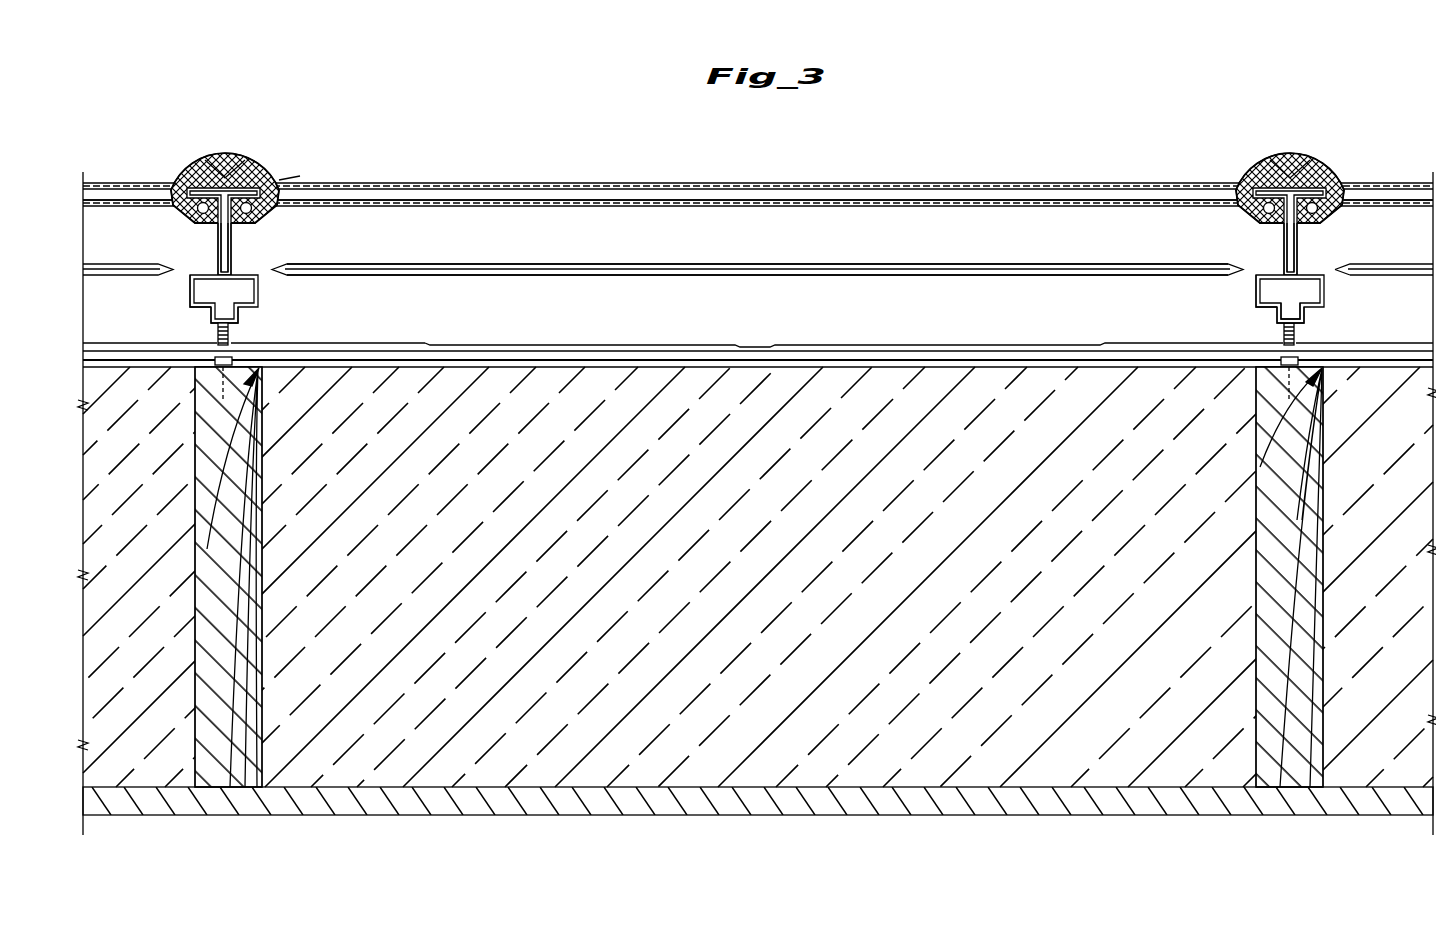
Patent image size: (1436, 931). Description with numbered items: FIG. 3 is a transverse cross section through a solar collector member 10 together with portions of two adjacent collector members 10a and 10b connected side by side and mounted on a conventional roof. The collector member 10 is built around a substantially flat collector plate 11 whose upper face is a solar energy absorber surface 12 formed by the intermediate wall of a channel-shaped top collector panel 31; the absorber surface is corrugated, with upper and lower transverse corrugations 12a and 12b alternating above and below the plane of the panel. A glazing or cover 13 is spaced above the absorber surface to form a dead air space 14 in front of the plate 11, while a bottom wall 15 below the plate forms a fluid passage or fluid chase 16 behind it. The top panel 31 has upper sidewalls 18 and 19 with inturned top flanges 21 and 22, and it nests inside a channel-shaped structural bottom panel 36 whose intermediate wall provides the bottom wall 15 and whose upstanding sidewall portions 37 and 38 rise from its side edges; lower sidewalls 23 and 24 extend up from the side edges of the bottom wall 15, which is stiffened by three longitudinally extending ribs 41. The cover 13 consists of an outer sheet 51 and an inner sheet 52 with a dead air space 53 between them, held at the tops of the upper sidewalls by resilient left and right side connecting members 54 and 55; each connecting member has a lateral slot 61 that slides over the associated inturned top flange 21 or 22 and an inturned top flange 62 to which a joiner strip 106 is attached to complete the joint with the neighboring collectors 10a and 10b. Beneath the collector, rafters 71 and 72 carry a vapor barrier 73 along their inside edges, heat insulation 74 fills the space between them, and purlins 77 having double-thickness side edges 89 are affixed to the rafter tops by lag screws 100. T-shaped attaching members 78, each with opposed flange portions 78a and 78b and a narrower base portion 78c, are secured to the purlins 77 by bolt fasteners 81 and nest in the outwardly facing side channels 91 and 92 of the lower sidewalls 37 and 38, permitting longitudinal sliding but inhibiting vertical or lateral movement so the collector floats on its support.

The solar collector member 10 is at (456, 165).
The adjacent collector member 10a is at (748, 210).
The adjacent collector member 10b is at (1305, 150).
The collector plate 11 is at (418, 264).
The solar energy absorber surface 12 is at (914, 261).
The upper transverse corrugations 12a is at (676, 264).
The lower transverse corrugations 12b is at (685, 277).
The glazing or cover 13 is at (118, 176).
The dead air space 14 is at (796, 244).
The bottom wall 15 is at (368, 342).
The fluid passage or fluid chase 16 is at (796, 314).
The upper sidewall 18 is at (235, 257).
The upper sidewall 19 is at (1280, 237).
The inturned top flange 21 is at (270, 165).
The inturned top flange 22 is at (1245, 172).
The lower sidewall 23 is at (244, 327).
The lower sidewall 24 is at (1268, 313).
The top collector panel 31 is at (1042, 260).
The structural bottom panel 36 is at (904, 341).
The sidewall portion 37 is at (1298, 243).
The sidewall portion 38 is at (1285, 250).
The ribs 41 is at (416, 343).
The outer sheet 51 is at (594, 183).
The inner sheet 52 is at (600, 208).
The dead air space 53 is at (686, 192).
The left side connecting member 54 is at (262, 215).
The right side connecting member 55 is at (190, 215).
The lateral slot 61 is at (284, 178).
The inturned top flange 62 is at (243, 157).
The rafter 71 is at (283, 770).
The rafter 72 is at (1206, 790).
The vapor barrier 73 is at (748, 782).
The heat insulation 74 is at (540, 768).
The purlin 77 is at (603, 358).
The attaching member 78 is at (246, 297).
The flange portion 78a is at (1320, 293).
The flange portion 78b is at (1258, 290).
The base portion 78c is at (1300, 313).
The bolt fastener 81 is at (218, 334).
The double-thickness side edges 89 is at (503, 360).
The side channel 91 is at (246, 282).
The side channel 92 is at (190, 295).
The lag screws 100 is at (215, 360).
The joiner strip 106 is at (197, 156).